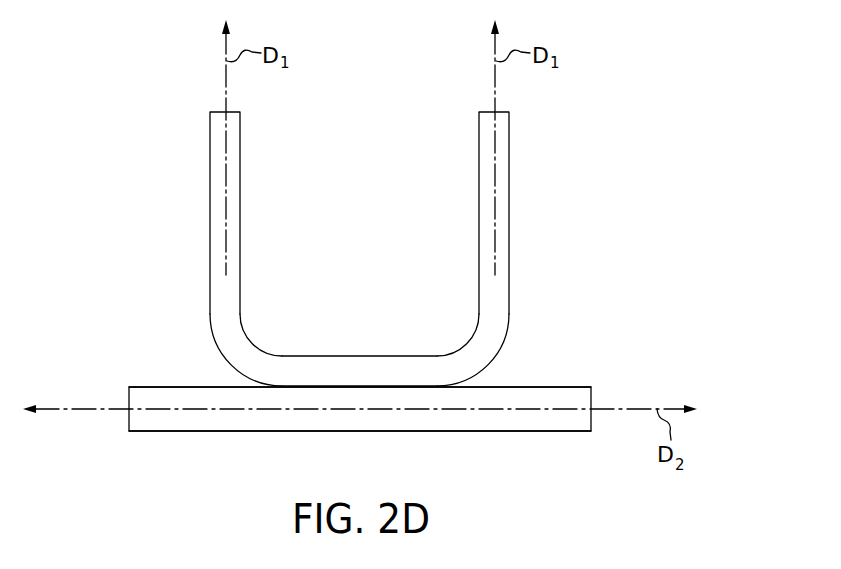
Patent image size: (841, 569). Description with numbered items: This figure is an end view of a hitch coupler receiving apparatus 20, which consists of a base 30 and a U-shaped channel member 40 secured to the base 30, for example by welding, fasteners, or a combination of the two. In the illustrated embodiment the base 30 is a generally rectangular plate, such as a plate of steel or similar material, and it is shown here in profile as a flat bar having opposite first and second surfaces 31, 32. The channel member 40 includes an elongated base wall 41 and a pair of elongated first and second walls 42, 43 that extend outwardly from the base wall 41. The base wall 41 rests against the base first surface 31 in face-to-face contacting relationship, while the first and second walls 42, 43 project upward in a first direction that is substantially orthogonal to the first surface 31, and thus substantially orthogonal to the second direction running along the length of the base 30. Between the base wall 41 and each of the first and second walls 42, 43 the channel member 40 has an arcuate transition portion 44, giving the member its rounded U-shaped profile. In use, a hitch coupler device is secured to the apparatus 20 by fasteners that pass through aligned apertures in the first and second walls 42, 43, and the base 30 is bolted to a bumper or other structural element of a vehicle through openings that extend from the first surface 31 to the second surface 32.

The hitch coupler receiving apparatus 20 is at (587, 235).
The base 30 is at (596, 392).
The first surface 31 is at (140, 387).
The second surface 32 is at (170, 432).
The U-shaped channel member 40 is at (510, 205).
The base wall 41 is at (362, 356).
The first wall 42 is at (215, 144).
The second wall 43 is at (503, 143).
The arcuate transition portion 44 is at (226, 360).